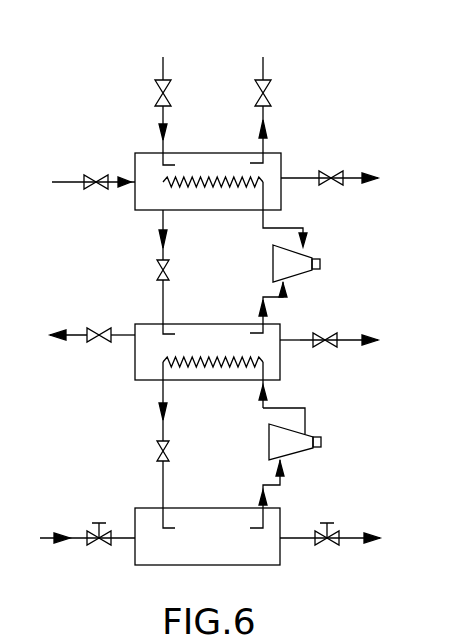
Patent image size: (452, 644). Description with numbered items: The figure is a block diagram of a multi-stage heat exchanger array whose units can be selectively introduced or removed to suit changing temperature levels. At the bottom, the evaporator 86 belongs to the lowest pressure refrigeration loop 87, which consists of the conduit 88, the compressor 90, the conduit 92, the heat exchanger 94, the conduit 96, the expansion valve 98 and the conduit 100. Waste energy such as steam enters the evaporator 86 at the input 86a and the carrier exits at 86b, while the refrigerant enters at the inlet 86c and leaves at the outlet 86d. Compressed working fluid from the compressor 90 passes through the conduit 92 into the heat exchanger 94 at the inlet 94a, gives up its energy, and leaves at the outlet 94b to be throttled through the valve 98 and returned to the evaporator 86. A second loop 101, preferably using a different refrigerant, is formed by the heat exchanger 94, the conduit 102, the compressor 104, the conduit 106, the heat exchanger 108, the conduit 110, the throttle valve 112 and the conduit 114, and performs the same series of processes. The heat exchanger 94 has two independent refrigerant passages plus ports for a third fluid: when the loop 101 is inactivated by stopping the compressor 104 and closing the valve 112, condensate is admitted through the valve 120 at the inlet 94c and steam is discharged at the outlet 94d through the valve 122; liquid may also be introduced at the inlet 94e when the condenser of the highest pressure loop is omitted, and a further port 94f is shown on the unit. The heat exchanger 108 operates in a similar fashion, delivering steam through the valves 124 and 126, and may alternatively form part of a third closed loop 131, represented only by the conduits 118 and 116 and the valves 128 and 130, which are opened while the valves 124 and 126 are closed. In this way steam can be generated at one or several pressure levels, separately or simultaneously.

The third closed loop 131 is at (148, 57).
The valve 128 is at (160, 93).
The conduit 118 is at (160, 118).
The valve 130 is at (265, 90).
The conduit 116 is at (266, 112).
The valve 124 is at (93, 176).
The valve 126 is at (330, 174).
The heat exchanger 108 is at (133, 210).
The conduit 110 is at (160, 233).
The throttle valve 112 is at (157, 270).
The conduit 114 is at (167, 292).
The conduit 106 is at (305, 240).
The compressor 104 is at (313, 256).
The conduit 102 is at (270, 297).
The outlet port 94f is at (259, 318).
The inlet 94e is at (166, 323).
The valve 120 is at (99, 328).
The inlet 94c is at (125, 338).
The heat exchanger 94 is at (140, 380).
The valve 122 is at (330, 338).
The outlet 94d is at (300, 342).
The outlet 94b is at (166, 390).
The conduit 96 is at (160, 405).
The expansion valve 98 is at (157, 452).
The conduit 100 is at (160, 475).
The inlet 86c is at (167, 506).
The inlet 94a is at (268, 383).
The conduit 92 is at (306, 410).
The compressor 90 is at (322, 440).
The conduit 88 is at (283, 488).
The outlet 86d is at (262, 501).
The evaporator 86 is at (282, 563).
The input 86a is at (77, 538).
The outlet 86b is at (300, 538).
The second working fluid loop 101 is at (96, 253).
The lowest pressure refrigeration loop 87 is at (94, 445).